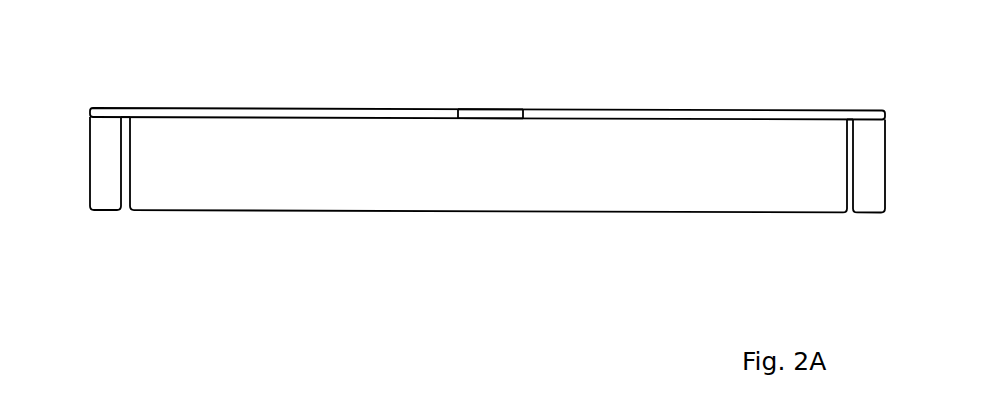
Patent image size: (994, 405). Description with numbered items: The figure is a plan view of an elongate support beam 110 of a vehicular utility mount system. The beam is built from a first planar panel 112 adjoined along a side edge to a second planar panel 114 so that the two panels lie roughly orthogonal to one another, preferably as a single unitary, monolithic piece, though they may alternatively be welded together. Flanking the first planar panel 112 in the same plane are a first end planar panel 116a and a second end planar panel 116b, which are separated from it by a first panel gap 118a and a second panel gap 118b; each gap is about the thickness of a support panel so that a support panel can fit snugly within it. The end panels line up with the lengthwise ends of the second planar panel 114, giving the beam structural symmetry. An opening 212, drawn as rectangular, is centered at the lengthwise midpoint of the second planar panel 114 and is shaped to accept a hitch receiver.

The elongate support beam 110 is at (233, 312).
The first planar panel 112 is at (563, 173).
The second planar panel 114 is at (285, 116).
The first end planar panel 116a is at (105, 193).
The second end planar panel 116b is at (865, 193).
The first panel gap 118a is at (128, 217).
The second panel gap 118b is at (847, 218).
The opening 212 is at (503, 108).